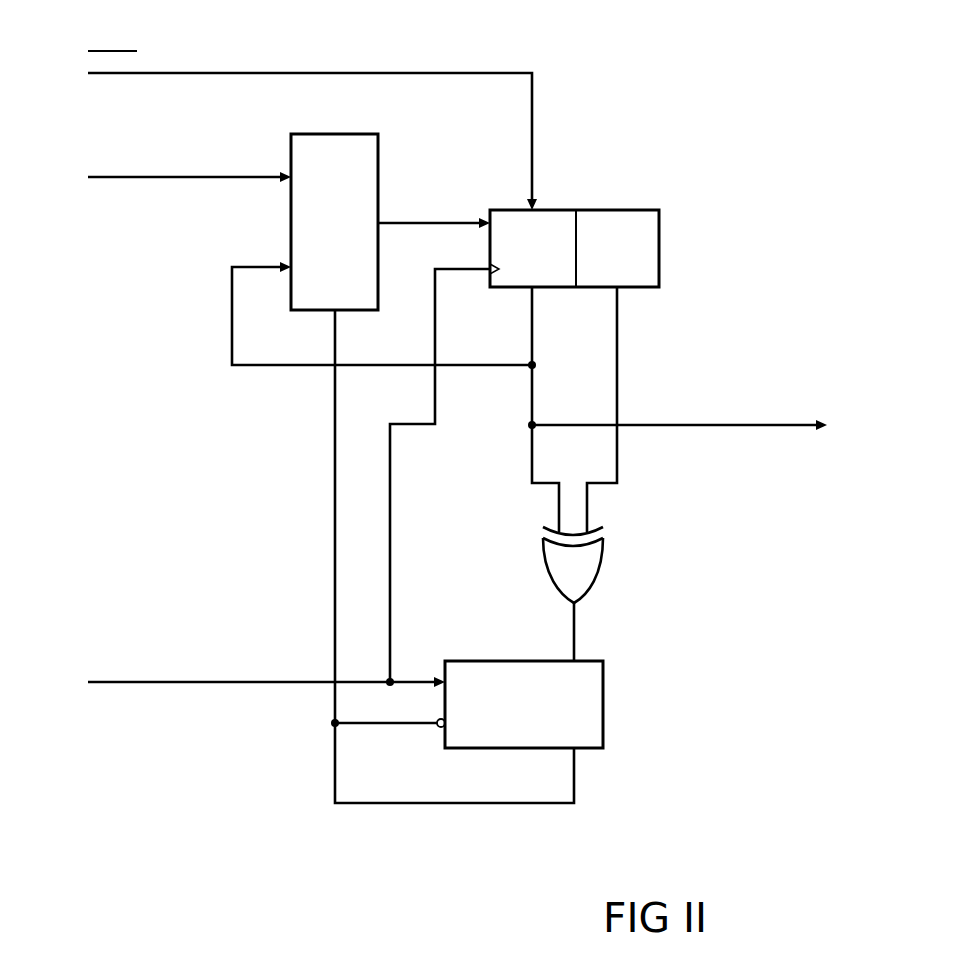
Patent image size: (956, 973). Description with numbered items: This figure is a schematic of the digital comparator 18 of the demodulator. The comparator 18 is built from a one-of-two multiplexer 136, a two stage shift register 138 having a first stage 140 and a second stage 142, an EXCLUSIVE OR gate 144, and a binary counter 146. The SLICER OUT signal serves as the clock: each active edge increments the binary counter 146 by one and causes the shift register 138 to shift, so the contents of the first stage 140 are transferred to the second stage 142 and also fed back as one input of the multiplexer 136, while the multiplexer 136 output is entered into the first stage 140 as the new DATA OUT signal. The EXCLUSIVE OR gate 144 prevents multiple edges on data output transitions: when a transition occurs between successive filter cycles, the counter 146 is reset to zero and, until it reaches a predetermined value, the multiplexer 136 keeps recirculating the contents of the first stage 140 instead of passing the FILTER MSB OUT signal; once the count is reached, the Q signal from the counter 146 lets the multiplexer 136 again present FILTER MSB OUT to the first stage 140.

The comparator 18 is at (765, 748).
The 1 of 2 multiplexer 136 is at (363, 137).
The 2 stage shift register 138 is at (668, 202).
The first stage 140 is at (550, 220).
The second stage 142 is at (621, 222).
The EXCLUSIVE OR gate 144 is at (598, 580).
The binary counter 146 is at (604, 692).